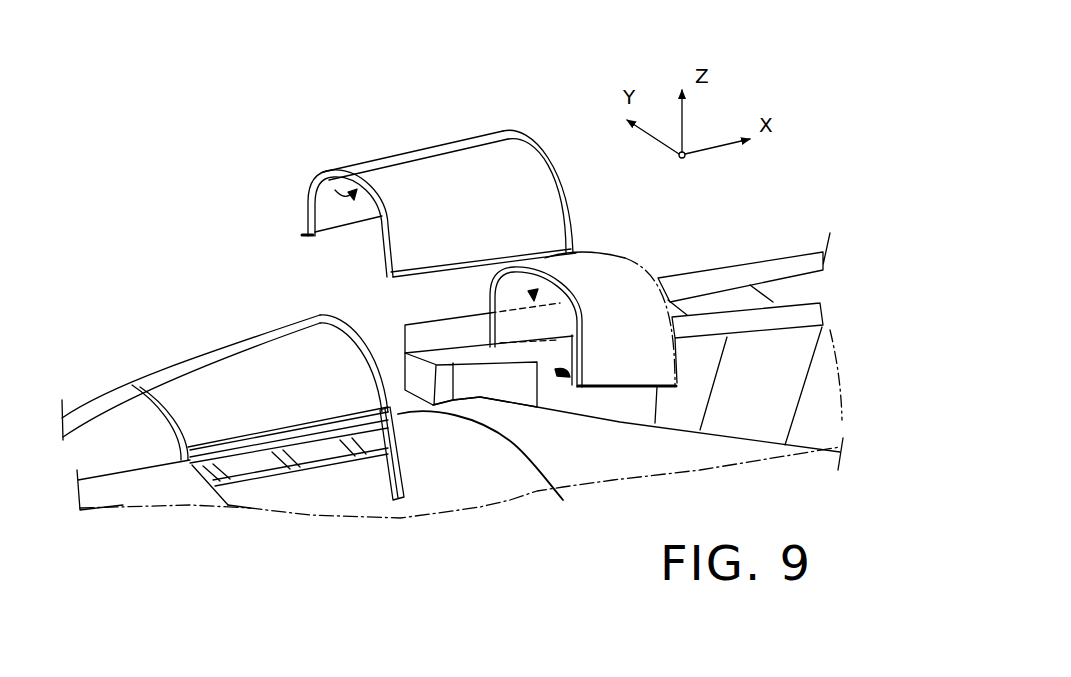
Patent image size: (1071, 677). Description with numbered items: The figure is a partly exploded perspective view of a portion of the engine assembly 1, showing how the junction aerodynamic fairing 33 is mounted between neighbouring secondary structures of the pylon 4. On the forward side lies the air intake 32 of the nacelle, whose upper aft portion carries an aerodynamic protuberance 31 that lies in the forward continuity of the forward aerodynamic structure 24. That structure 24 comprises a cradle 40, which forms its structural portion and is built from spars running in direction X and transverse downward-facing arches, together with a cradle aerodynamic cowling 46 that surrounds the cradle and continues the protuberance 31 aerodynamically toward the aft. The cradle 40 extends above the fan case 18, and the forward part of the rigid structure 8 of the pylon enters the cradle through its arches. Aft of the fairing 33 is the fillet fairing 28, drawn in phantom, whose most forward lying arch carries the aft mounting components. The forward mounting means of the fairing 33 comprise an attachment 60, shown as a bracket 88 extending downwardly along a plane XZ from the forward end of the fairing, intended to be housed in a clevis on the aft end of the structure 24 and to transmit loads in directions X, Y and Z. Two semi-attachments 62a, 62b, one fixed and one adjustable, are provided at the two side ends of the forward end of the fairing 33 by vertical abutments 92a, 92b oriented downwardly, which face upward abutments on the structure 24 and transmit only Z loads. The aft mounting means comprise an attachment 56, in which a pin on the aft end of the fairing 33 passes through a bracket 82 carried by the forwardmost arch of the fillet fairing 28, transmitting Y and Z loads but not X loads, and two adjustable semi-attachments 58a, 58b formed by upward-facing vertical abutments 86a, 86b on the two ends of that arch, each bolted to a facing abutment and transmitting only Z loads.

The engine assembly 1 is at (136, 190).
The pylon 4 is at (799, 215).
The rigid structure 8 is at (729, 261).
The fan case 18 is at (563, 488).
The forward aerodynamic structure 24 is at (225, 383).
The fillet fairing 28 is at (613, 262).
The aerodynamic protuberance 31 is at (112, 450).
The air intake 32 is at (172, 488).
The junction aerodynamic fairing 33 is at (348, 185).
The cradle 40 is at (296, 483).
The cradle aerodynamic cowling 46 is at (207, 355).
The attachment 56 is at (523, 379).
The semi-attachment 58a is at (622, 424).
The semi-attachment 58b is at (448, 308).
The attachment 60 is at (285, 180).
The semi-attachment 62a is at (326, 429).
The semi-attachment 62b is at (216, 233).
The bracket 82 is at (523, 379).
The vertical abutment 86a is at (577, 358).
The vertical abutment 86b is at (497, 330).
The bracket 88 is at (340, 196).
The vertical abutment 92a is at (390, 275).
The vertical abutment 92b is at (304, 235).